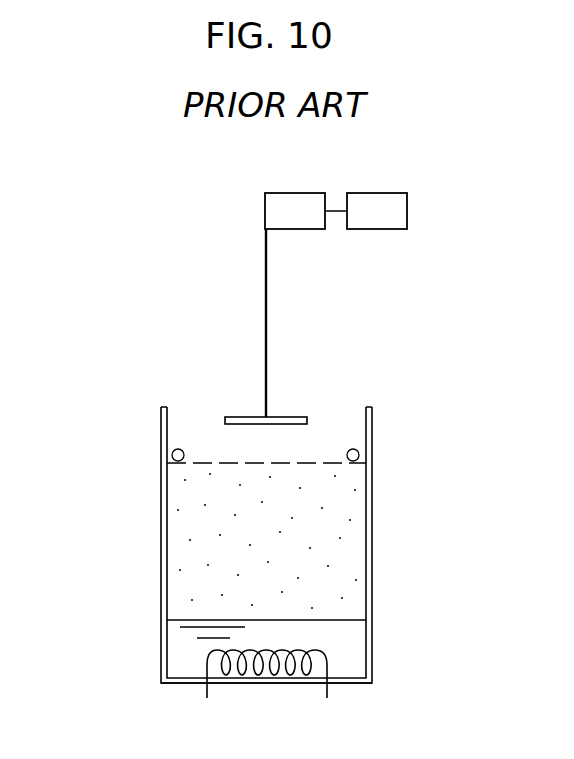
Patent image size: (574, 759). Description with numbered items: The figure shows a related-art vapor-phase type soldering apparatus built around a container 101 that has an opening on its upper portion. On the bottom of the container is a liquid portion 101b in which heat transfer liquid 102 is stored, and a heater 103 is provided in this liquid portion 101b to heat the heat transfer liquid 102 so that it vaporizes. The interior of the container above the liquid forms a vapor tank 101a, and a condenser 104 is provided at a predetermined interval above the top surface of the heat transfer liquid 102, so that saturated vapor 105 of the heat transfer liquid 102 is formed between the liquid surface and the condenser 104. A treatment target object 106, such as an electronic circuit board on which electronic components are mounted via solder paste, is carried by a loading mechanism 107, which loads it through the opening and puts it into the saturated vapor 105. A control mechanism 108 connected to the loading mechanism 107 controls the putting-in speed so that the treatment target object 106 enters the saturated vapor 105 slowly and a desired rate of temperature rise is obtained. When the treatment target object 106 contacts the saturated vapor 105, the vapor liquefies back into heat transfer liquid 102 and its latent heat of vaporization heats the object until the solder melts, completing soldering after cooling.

The container 101 is at (372, 590).
The vapor tank 101a is at (333, 547).
The liquid portion 101b is at (187, 657).
The heat transfer liquid 102 is at (352, 639).
The heater 103 is at (327, 665).
The condenser 104 is at (359, 452).
The saturated vapor 105 is at (347, 510).
The treatment target object 106 is at (287, 417).
The loading mechanism 107 is at (290, 193).
The control mechanism 108 is at (385, 193).